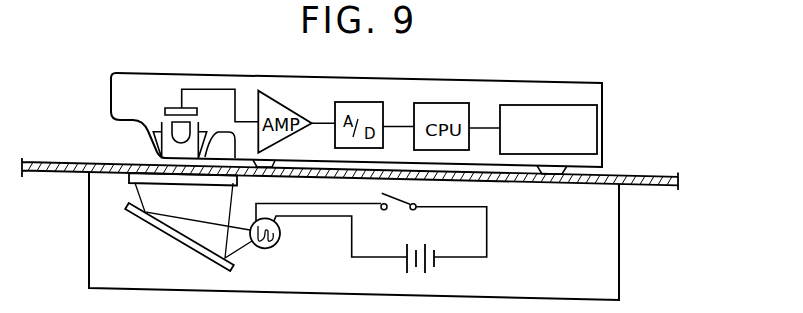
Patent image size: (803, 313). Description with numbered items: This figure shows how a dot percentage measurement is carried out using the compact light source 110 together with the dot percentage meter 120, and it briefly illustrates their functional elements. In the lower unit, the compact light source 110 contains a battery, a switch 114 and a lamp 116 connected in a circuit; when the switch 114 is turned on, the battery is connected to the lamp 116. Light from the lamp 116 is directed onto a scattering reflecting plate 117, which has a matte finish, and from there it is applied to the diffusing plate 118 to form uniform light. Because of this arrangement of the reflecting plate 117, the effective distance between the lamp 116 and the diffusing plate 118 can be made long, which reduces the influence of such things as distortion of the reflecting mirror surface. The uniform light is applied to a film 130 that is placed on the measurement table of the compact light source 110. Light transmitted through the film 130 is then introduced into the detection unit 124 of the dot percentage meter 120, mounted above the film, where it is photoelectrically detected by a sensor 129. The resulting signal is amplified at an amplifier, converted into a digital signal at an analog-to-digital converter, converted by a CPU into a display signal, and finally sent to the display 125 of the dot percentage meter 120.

The compact light source 110 is at (643, 253).
The switch 114 is at (399, 201).
The lamp 116 is at (278, 246).
The scattering reflecting plate 117 is at (178, 243).
The diffusing plate 118 is at (169, 178).
The dot percentage meter 120 is at (611, 84).
The detection unit 124 is at (151, 146).
The display 125 is at (543, 105).
The sensor 129 is at (172, 107).
The film 130 is at (640, 177).